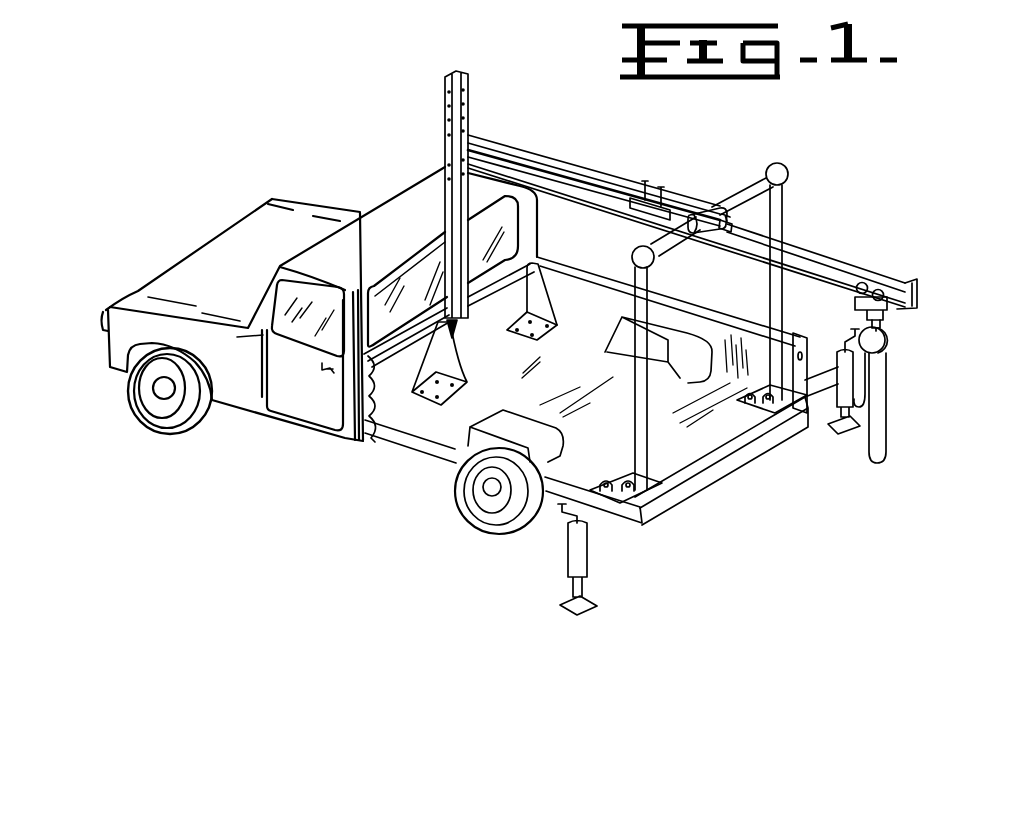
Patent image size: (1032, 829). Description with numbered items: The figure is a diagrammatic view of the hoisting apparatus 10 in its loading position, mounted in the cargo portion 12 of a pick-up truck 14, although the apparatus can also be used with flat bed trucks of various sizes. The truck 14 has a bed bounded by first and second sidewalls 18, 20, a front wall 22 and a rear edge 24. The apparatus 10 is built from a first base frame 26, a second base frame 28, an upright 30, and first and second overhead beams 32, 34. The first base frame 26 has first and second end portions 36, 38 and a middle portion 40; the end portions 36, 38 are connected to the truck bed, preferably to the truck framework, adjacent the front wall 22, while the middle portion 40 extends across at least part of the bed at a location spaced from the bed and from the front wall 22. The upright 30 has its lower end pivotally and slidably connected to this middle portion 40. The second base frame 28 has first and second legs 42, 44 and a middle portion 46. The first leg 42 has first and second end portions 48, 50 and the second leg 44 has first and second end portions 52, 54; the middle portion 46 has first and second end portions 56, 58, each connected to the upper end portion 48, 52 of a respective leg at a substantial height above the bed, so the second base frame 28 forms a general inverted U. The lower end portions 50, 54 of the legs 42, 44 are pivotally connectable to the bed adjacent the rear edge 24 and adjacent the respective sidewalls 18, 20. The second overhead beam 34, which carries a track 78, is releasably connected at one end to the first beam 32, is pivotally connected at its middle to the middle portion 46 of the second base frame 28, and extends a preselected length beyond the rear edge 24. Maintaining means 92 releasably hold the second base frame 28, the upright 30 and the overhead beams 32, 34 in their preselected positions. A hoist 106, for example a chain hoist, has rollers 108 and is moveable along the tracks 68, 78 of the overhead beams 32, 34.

The hoisting apparatus 10 is at (719, 290).
The cargo portion 12 is at (597, 430).
The pick-up truck 14 is at (383, 180).
The first sidewall 18 is at (362, 428).
The second sidewall 20 is at (694, 343).
The front wall 22 is at (518, 295).
The rear edge 24 is at (721, 465).
The first base frame 26 is at (414, 366).
The second base frame 28 is at (796, 272).
The upright 30 is at (483, 77).
The first overhead beam 32 is at (566, 170).
The second overhead beam 34 is at (848, 262).
The first end portion of first base frame 36 is at (459, 340).
The second end portion of first base frame 38 is at (549, 280).
The middle portion of first base frame 40 is at (528, 340).
The first leg 42 is at (627, 293).
The second leg 44 is at (730, 247).
The middle portion of second base frame 46 is at (718, 200).
The first end portion of first leg 48 is at (653, 281).
The second end portion of first leg 50 is at (650, 447).
The first end portion of second leg 52 is at (788, 198).
The second end portion of second leg 54 is at (767, 383).
The first end portion of middle portion 56 is at (650, 244).
The second end portion of middle portion 58 is at (762, 184).
The track 68 is at (605, 192).
The track 78 is at (851, 281).
The maintaining means 92 is at (728, 234).
The hoist 106 is at (905, 340).
The rollers 108 is at (905, 308).